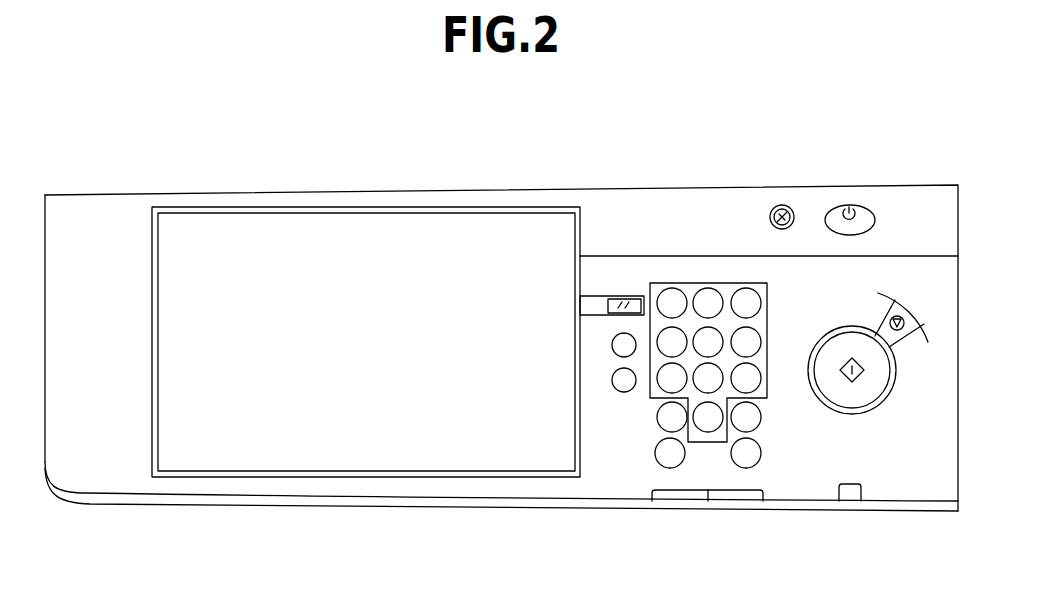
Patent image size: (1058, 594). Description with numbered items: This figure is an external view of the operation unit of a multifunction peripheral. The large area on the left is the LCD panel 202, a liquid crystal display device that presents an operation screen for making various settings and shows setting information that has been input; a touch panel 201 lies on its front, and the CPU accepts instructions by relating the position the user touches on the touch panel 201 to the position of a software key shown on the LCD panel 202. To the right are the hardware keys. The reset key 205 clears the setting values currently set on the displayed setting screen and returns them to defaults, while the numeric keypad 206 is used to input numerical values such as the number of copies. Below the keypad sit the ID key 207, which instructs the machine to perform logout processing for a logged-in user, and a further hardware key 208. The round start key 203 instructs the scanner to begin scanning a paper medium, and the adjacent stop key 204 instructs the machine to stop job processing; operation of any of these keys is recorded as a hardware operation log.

The touch panel 201 is at (315, 237).
The LCD panel 202 is at (450, 218).
The start key 203 is at (845, 413).
The stop key 204 is at (899, 330).
The reset key 205 is at (630, 296).
The numeric keypad 206 is at (710, 288).
The ID key 207 is at (656, 452).
The hardware key 208 is at (746, 470).